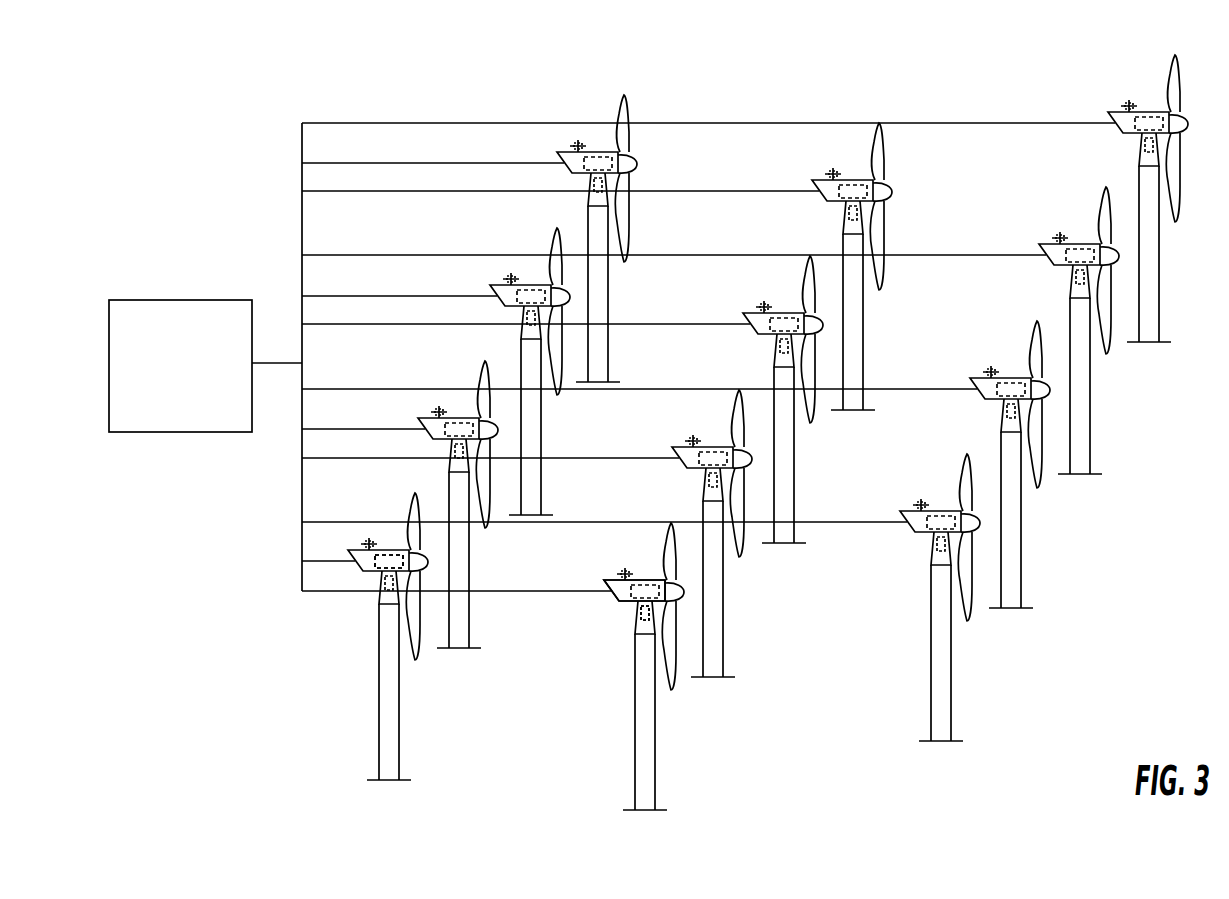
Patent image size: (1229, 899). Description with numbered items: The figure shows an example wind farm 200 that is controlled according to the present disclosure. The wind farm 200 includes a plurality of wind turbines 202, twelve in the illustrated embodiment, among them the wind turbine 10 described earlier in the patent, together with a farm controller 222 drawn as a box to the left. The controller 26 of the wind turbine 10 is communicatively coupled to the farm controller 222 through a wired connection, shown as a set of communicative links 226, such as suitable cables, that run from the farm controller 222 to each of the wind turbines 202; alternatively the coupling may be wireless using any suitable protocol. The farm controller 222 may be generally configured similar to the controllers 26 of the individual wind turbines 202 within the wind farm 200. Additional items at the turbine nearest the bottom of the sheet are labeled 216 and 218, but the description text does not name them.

The wind farm 200 is at (216, 192).
The wind turbines 202 is at (484, 548).
The wind turbine 10 is at (414, 709).
The controller 26 is at (391, 552).
The nacelle sensor 216 is at (612, 572).
The tower sensor 218 is at (636, 616).
The farm controller 222 is at (198, 374).
The communicative links 226 is at (440, 253).